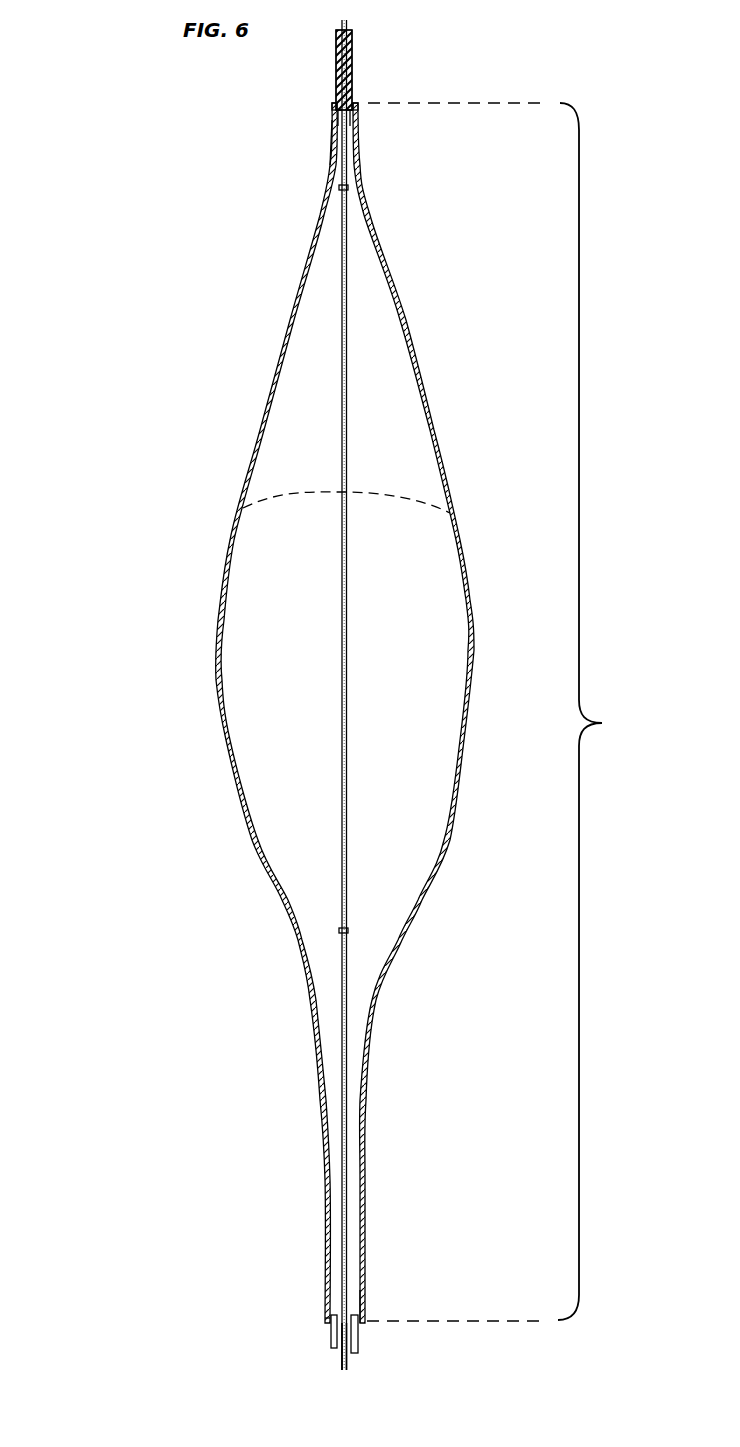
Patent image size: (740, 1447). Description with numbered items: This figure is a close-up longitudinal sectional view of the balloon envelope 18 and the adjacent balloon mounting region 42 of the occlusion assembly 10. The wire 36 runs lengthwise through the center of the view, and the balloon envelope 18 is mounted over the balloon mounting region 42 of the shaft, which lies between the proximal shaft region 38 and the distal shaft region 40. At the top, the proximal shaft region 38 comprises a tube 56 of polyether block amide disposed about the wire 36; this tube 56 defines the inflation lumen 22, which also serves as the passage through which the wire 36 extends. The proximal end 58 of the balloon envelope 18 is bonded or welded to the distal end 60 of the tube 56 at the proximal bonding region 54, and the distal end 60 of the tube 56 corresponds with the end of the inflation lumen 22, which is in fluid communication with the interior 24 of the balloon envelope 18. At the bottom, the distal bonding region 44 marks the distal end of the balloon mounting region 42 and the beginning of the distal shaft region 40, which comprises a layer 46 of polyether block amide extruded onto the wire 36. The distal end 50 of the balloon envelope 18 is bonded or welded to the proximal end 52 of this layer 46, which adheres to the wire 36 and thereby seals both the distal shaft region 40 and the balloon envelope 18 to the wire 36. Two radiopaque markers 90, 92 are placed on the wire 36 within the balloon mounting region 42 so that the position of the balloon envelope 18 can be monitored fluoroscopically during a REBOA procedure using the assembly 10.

The assembly 10 is at (125, 388).
The balloon envelope 18 is at (455, 496).
The inflation lumen 22 is at (335, 1333).
The interior 24 is at (430, 670).
The wire 36 is at (340, 637).
The proximal shaft region 38 is at (356, 1350).
The distal shaft region 40 is at (352, 58).
The balloon mounting region 42 is at (502, 712).
The distal bonding region 44 is at (358, 113).
The layer 46 is at (352, 58).
The distal end 50 is at (333, 105).
The proximal end 52 is at (331, 143).
The proximal bonding region 54 is at (325, 1323).
The tube 56 is at (356, 1350).
The proximal end 58 is at (360, 1325).
The distal end 60 is at (355, 1310).
The radiopaque marker 90 is at (349, 187).
The radiopaque marker 92 is at (349, 930).